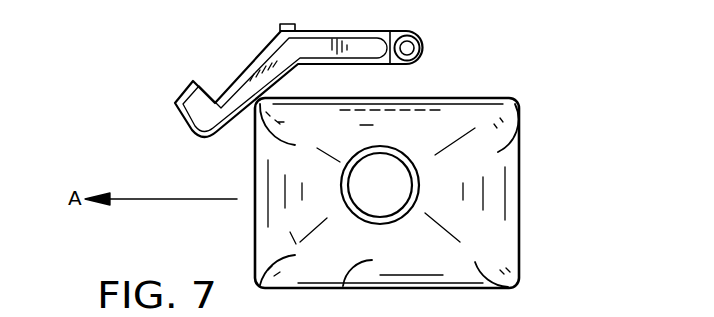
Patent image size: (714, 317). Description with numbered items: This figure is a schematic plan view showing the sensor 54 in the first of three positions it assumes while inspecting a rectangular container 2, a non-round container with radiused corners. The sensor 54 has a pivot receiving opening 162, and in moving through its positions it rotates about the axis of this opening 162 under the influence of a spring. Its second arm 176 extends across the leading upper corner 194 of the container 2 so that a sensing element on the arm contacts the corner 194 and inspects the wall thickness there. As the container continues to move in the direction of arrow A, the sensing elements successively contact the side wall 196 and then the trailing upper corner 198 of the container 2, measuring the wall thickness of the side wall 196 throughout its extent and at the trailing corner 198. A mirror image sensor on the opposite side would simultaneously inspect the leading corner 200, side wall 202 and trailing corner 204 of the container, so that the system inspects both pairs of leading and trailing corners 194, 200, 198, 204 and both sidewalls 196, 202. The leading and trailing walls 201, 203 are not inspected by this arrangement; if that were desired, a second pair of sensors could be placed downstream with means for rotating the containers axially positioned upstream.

The rectangular container 2 is at (527, 96).
The sensor 54 is at (219, 70).
The pivot receiving opening 162 is at (417, 40).
The second arm 176 is at (262, 50).
The leading upper corner 194 is at (295, 145).
The side wall 196 is at (370, 100).
The trailing upper corner 198 is at (498, 152).
The leading corner 200 is at (295, 255).
The leading wall 201 is at (257, 180).
The side wall 202 is at (372, 260).
The trailing wall 203 is at (520, 217).
The trailing corner 204 is at (484, 265).